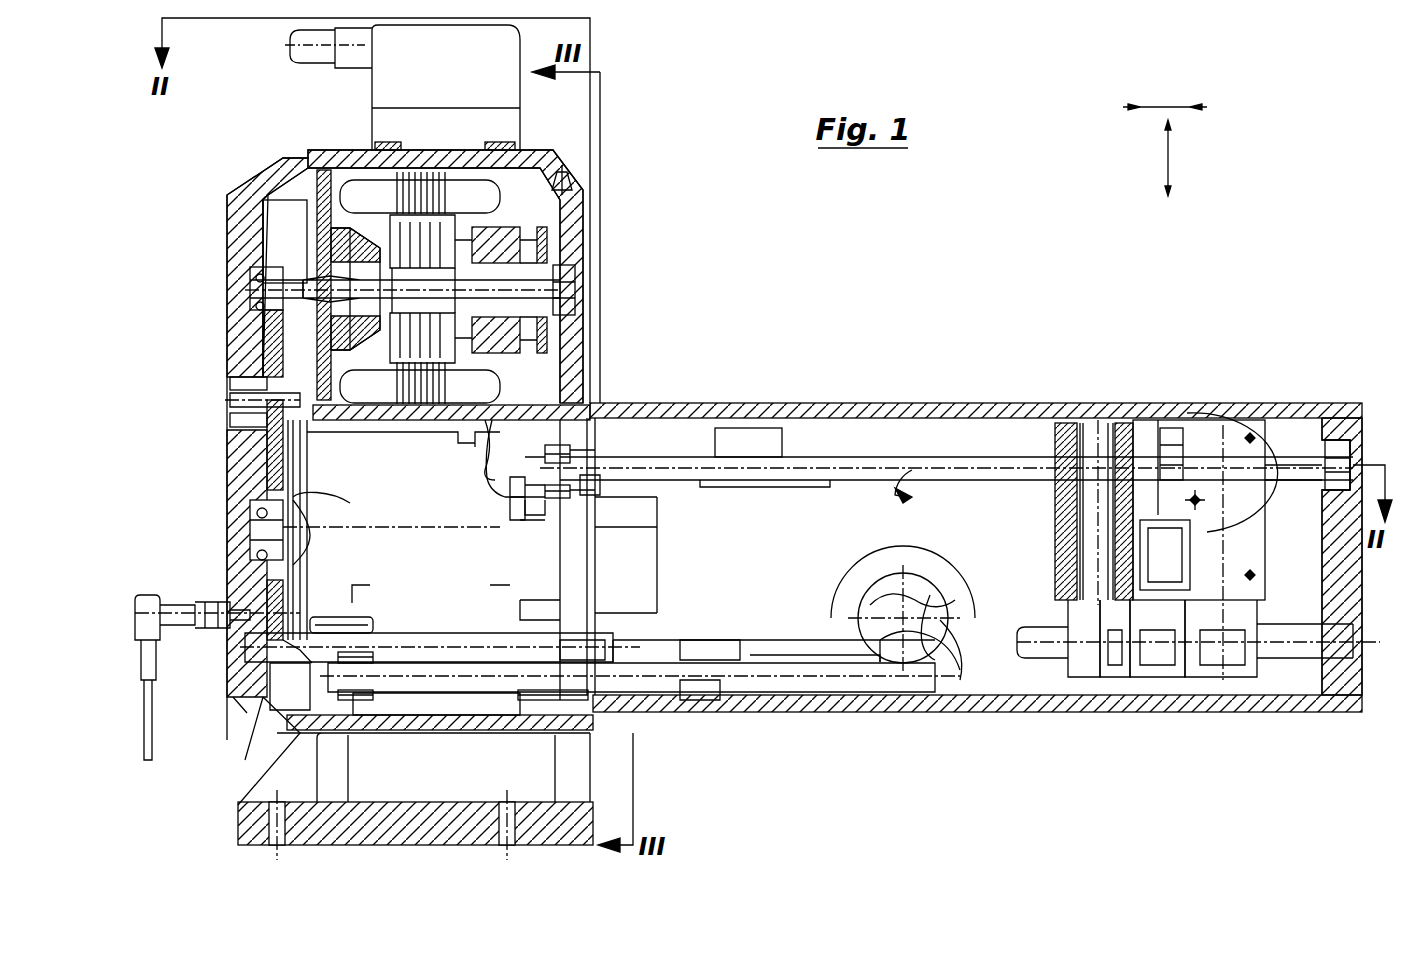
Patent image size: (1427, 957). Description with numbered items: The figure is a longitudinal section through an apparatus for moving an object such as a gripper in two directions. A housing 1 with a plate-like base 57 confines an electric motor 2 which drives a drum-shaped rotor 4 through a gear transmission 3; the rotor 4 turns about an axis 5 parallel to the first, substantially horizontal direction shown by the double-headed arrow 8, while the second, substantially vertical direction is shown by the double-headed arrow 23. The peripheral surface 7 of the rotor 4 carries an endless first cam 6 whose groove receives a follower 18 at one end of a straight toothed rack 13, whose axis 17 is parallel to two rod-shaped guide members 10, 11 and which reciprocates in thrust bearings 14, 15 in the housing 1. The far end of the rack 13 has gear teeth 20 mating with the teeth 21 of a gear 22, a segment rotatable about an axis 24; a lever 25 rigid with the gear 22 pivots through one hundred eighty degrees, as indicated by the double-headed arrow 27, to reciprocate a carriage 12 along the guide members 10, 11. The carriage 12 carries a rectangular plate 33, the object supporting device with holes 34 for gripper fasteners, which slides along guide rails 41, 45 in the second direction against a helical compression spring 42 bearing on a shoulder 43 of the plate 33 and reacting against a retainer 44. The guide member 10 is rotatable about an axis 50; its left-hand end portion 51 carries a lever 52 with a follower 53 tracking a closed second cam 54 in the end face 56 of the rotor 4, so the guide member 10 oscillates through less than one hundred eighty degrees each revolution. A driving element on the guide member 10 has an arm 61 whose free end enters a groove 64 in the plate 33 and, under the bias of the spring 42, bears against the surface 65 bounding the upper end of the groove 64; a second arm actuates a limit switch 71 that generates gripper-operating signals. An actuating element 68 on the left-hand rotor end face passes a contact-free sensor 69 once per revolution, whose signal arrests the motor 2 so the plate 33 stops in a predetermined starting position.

The housing 1 is at (728, 405).
The electric motor 2 is at (368, 190).
The gear transmission 3 is at (270, 345).
The drum-shaped rotor 4 is at (353, 505).
The axis 5 is at (293, 557).
The first cam 6 is at (475, 457).
The peripheral surface 7 is at (228, 440).
The double-headed arrow 8 is at (1160, 107).
The guide member 10 is at (826, 405).
The guide member 11 is at (1262, 645).
The carriage 12 is at (1215, 418).
The toothed rack 13 is at (740, 695).
The thrust bearing 14 is at (630, 660).
The thrust bearing 15 is at (690, 700).
The axis 17 is at (770, 700).
The follower 18 is at (330, 735).
The gear teeth 20 is at (780, 680).
The teeth 21 is at (850, 680).
The gear 22 is at (895, 660).
The double-headed arrow 23 is at (1168, 157).
The axis 24 is at (945, 670).
The lever 25 is at (855, 570).
The double-headed arrow 27 is at (902, 455).
The object supporting device 33 is at (1203, 450).
The holes 34 is at (1245, 435).
The guide rail 41 is at (1218, 665).
The helical compression spring 42 is at (1160, 665).
The shoulder 43 is at (1115, 665).
The retainer 44 is at (1268, 500).
The guide rail 45 is at (1085, 660).
The axis 50 is at (810, 468).
The left-hand end portion 51 is at (600, 460).
The lever 52 is at (600, 470).
The follower 53 is at (545, 445).
The second cam 54 is at (560, 465).
The end face 56 is at (560, 430).
The base 57 is at (262, 830).
The arm 61 is at (1173, 460).
The groove 64 is at (1097, 415).
The surface 65 is at (1110, 420).
The actuating element 68 is at (270, 648).
The contact-free sensor 69 is at (240, 572).
The limit switch 71 is at (752, 440).